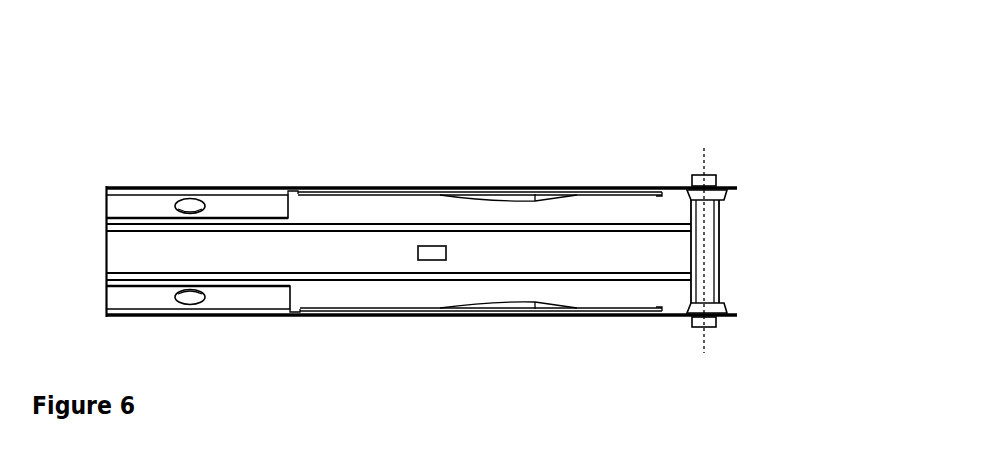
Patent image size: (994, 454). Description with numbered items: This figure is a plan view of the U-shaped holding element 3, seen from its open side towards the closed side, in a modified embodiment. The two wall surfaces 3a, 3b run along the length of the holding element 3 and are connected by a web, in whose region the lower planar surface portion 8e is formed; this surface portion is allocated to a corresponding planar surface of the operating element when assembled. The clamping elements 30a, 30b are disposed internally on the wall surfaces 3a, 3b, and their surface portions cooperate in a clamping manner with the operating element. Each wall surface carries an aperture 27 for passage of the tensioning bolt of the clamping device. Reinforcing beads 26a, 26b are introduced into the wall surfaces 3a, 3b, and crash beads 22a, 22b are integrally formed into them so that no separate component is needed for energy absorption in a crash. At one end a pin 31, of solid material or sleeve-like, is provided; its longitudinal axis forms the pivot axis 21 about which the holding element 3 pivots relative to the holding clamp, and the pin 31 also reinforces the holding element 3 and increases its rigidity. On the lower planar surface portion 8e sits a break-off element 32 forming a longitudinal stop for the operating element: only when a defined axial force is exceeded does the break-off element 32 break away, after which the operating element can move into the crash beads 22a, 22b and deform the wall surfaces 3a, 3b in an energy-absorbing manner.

The holding element 3 is at (636, 145).
The wall surface 3a is at (307, 186).
The wall surface 3b is at (297, 316).
The planar surface portion 8e is at (143, 258).
The pivot axis 21 is at (706, 160).
The crash bead 22a is at (538, 197).
The crash bead 22b is at (532, 304).
The reinforcing bead 26a is at (397, 193).
The reinforcing bead 26b is at (368, 311).
The aperture 27 is at (189, 206).
The clamping element 30a is at (232, 203).
The clamping element 30b is at (246, 300).
The pin 31 is at (710, 228).
The break-off element 32 is at (432, 254).